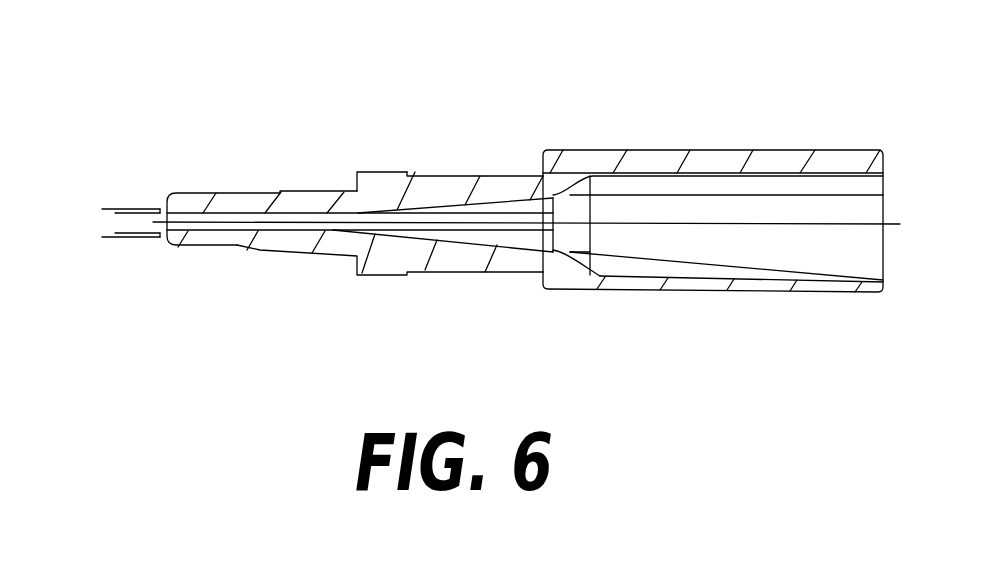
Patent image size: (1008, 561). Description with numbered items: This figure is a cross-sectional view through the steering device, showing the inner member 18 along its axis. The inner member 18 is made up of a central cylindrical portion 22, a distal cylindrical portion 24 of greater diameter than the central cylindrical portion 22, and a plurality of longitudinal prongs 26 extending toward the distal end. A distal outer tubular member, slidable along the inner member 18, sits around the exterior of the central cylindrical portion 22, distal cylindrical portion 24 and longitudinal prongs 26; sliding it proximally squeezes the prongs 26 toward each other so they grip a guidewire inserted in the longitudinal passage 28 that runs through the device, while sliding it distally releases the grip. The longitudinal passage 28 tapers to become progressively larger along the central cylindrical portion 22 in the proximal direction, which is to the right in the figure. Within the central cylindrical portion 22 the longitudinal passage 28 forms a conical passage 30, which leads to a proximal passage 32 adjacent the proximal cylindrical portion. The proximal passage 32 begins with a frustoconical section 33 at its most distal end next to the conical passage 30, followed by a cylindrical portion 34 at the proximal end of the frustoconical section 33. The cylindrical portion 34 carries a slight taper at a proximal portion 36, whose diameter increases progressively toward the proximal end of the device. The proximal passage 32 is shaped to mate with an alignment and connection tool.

The inner member 18 is at (560, 140).
The central cylindrical portion 22 is at (460, 185).
The distal cylindrical portion 24 is at (372, 185).
The longitudinal prongs 26 is at (315, 210).
The longitudinal passage 28 is at (242, 214).
The conical passage 30 is at (473, 240).
The proximal passage 32 is at (683, 207).
The frustoconical section 33 is at (560, 258).
The cylindrical portion 34 is at (598, 162).
The proximal portion 36 is at (798, 172).